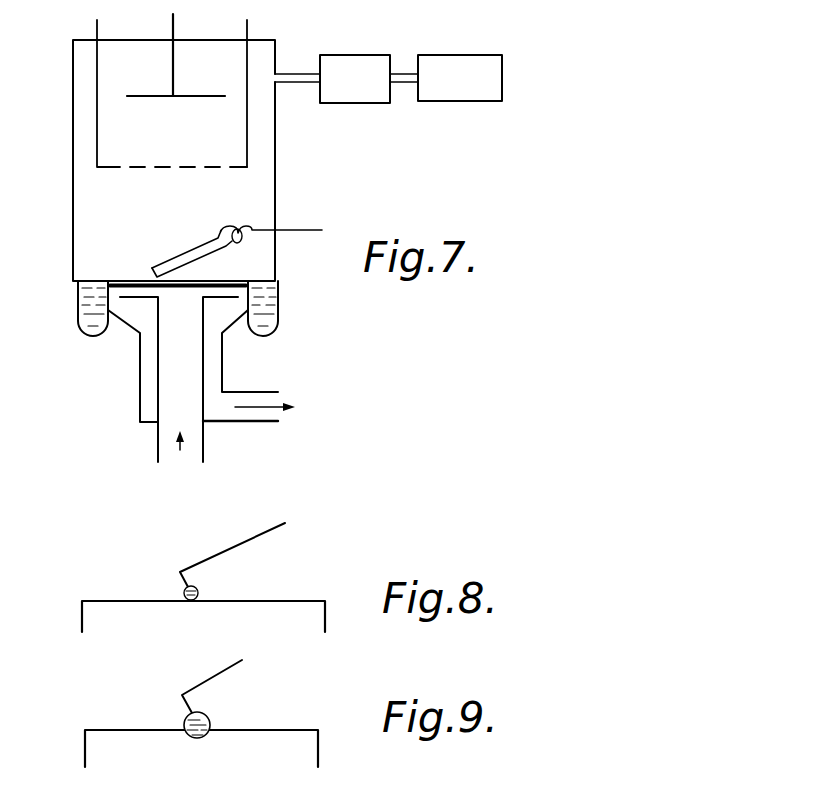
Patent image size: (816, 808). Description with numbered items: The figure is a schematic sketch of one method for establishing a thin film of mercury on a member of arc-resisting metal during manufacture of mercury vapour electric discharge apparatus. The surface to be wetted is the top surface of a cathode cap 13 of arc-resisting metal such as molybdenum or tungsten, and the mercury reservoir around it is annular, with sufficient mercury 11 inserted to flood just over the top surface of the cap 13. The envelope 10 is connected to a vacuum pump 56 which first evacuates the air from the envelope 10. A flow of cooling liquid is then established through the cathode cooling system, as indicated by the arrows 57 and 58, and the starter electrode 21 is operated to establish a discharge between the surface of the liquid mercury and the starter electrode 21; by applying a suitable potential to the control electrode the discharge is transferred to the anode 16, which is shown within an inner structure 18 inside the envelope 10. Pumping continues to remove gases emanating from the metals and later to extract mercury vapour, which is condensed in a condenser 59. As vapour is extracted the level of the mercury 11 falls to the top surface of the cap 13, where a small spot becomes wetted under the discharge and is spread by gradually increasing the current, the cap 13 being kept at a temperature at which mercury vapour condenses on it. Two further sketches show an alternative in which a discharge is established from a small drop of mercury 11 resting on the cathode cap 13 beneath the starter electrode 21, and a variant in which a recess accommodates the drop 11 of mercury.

In FIG. 7, the envelope 10 is at (73, 191).
In FIG. 7, the mercury 11 is at (88, 314).
In FIG. 8, the mercury 11 is at (191, 601).
In FIG. 9, the mercury 11 is at (209, 716).
In FIG. 7, the cathode cap 13 is at (224, 283).
In FIG. 8, the cathode cap 13 is at (281, 602).
In FIG. 7, the anode 16 is at (154, 96).
In FIG. 7, the inner chamber 18 is at (180, 167).
In FIG. 7, the starter electrode 21 is at (166, 273).
In FIG. 8, the starter electrode 21 is at (252, 542).
In FIG. 9, the starter electrode 21 is at (228, 672).
In FIG. 7, the vacuum pump 56 is at (357, 103).
In FIG. 7, the arrow 57 is at (180, 452).
In FIG. 7, the arrow 58 is at (268, 414).
In FIG. 7, the condenser 59 is at (465, 102).